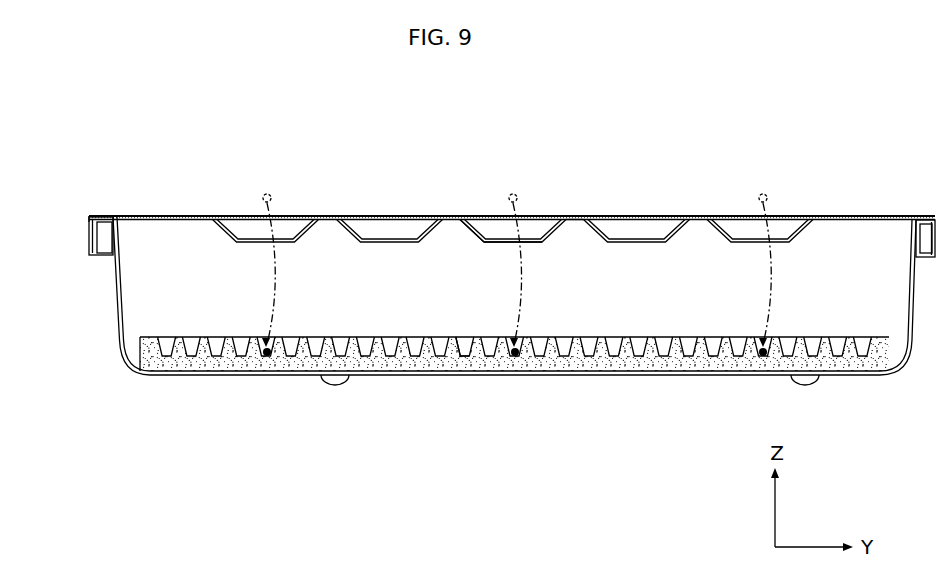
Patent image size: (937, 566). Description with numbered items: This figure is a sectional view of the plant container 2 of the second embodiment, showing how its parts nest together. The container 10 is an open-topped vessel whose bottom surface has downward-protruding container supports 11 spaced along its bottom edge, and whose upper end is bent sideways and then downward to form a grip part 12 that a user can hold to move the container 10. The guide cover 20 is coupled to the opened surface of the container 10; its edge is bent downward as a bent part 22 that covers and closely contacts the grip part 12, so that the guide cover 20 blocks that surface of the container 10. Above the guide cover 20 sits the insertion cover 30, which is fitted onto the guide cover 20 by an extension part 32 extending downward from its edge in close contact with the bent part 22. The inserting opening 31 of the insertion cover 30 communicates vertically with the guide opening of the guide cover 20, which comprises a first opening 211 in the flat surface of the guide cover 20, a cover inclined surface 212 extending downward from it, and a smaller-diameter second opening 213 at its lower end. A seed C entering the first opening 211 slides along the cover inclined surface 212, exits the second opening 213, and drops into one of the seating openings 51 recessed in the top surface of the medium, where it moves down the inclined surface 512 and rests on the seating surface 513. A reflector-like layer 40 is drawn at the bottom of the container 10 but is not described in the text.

The plant container 2 is at (108, 65).
The container 10 is at (116, 302).
The container support 11 is at (335, 380).
The grip part 12 is at (88, 246).
The guide cover 20 is at (134, 215).
The bent part 22 is at (92, 233).
The insertion cover 30 is at (176, 215).
The inserting opening 31 is at (493, 215).
The extension part 32 is at (90, 218).
The reflector 40 is at (152, 357).
The seating opening 51 is at (502, 452).
The first opening 211 is at (563, 217).
The cover inclined surface 212 is at (474, 226).
The second opening 213 is at (483, 242).
The inclined surface 512 is at (455, 348).
The seating surface 513 is at (467, 356).
The seed C is at (267, 193).